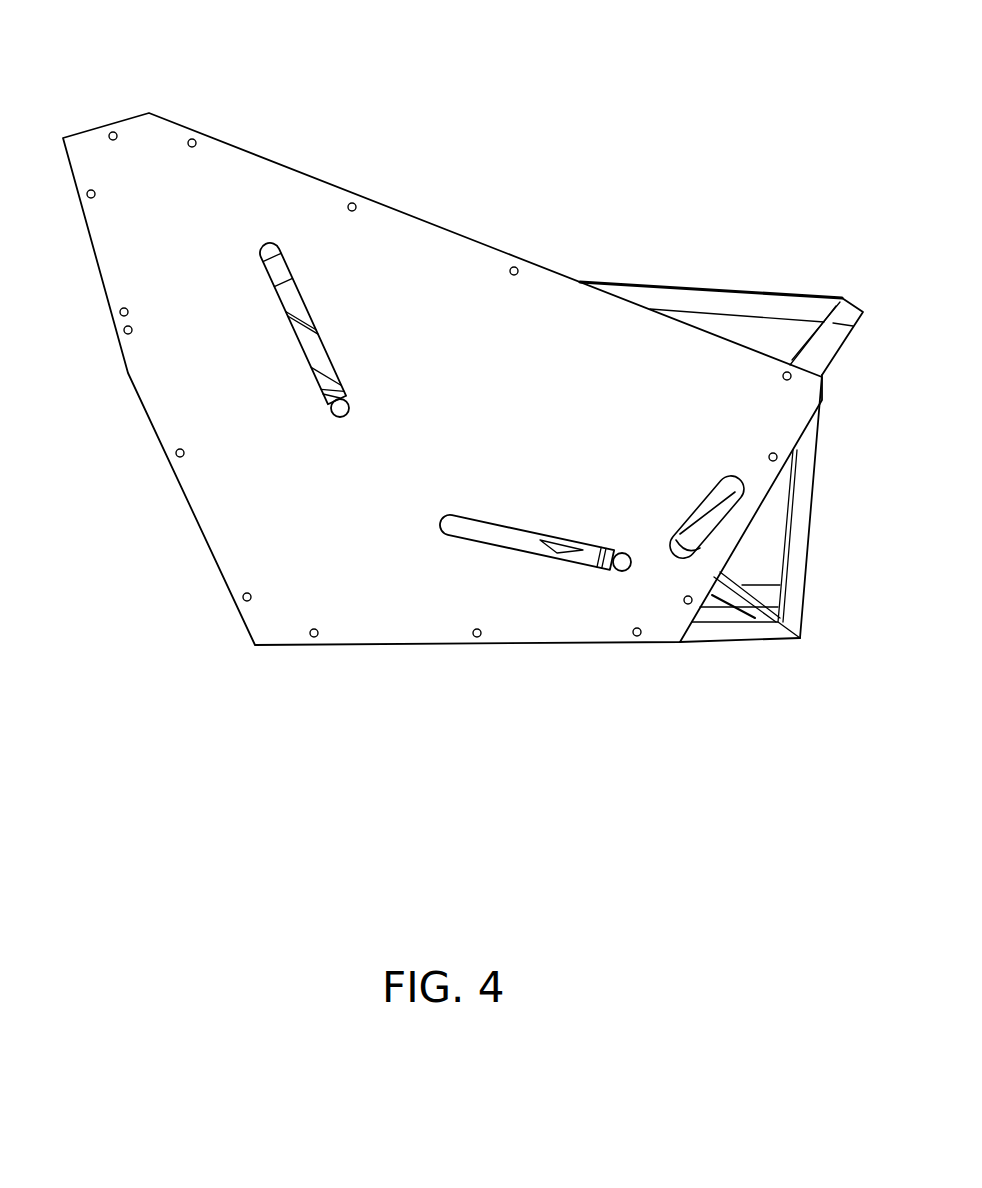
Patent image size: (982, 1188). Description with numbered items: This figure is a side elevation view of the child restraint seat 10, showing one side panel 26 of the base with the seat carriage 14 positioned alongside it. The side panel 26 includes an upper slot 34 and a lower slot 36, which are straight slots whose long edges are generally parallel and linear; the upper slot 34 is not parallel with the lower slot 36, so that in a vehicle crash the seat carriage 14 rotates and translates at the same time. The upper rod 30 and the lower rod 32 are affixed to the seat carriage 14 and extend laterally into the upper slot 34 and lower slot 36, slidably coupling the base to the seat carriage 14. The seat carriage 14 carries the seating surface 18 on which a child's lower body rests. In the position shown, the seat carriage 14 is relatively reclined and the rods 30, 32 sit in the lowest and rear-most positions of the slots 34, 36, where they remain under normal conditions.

The child restraint seat 10 is at (228, 688).
The seat carriage 14 is at (669, 284).
The seating surface 18 is at (807, 340).
The side panel 26 is at (240, 148).
The upper rod 30 is at (333, 408).
The lower rod 32 is at (622, 573).
The upper slot 34 is at (292, 335).
The lower slot 36 is at (563, 563).